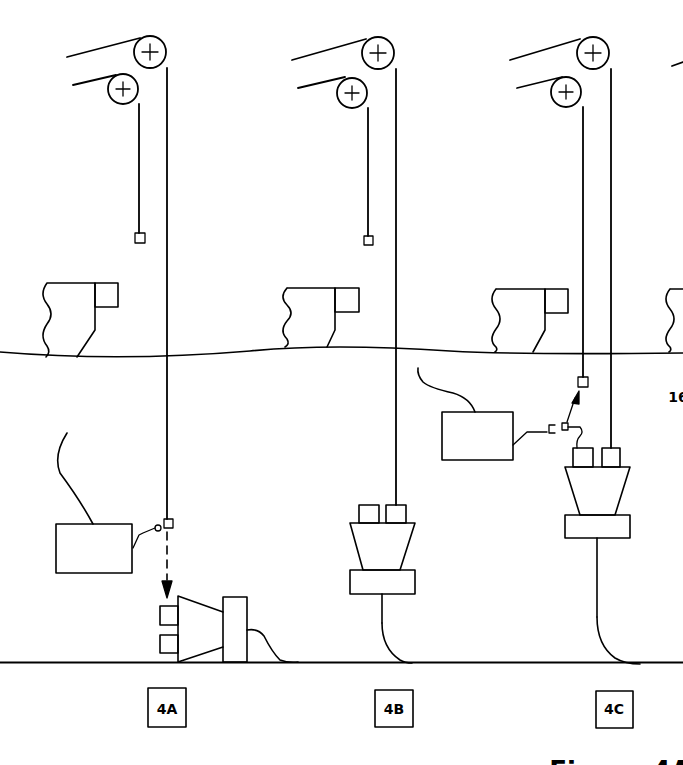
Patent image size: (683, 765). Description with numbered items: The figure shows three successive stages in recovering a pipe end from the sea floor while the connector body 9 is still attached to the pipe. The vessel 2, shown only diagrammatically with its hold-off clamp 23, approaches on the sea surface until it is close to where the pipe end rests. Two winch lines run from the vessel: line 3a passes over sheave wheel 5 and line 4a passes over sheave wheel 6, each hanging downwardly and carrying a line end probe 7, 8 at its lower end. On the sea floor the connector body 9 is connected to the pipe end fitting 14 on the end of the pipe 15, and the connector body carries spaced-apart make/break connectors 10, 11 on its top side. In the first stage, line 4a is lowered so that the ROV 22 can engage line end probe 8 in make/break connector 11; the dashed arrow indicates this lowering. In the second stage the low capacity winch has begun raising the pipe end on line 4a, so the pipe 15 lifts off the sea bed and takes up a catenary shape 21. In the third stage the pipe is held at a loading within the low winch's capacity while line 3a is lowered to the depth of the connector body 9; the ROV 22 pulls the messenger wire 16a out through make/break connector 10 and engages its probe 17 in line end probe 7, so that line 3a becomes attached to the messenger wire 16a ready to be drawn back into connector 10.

In FIG. 4A, the vessel 2 is at (67, 313).
In FIG. 4B, the vessel 2 is at (310, 318).
In FIG. 4C, the vessel 2 is at (520, 320).
In FIG. 4A, the line of high capacity winch 3a is at (138, 120).
In FIG. 4B, the line of high capacity winch 3a is at (366, 122).
In FIG. 4C, the line of high capacity winch 3a is at (581, 173).
In FIG. 4A, the line of low capacity winch 4a is at (168, 120).
In FIG. 4B, the line of low capacity winch 4a is at (398, 122).
In FIG. 4C, the line of low capacity winch 4a is at (612, 173).
In FIG. 4A, the sheave wheel 5 is at (110, 97).
In FIG. 4B, the sheave wheel 5 is at (340, 97).
In FIG. 4C, the sheave wheel 5 is at (552, 100).
In FIG. 4A, the sheave wheel 6 is at (169, 49).
In FIG. 4B, the sheave wheel 6 is at (398, 50).
In FIG. 4C, the sheave wheel 6 is at (612, 52).
In FIG. 4A, the line end probe 7 is at (134, 235).
In FIG. 4B, the line end probe 7 is at (362, 240).
In FIG. 4C, the line end probe 7 is at (576, 381).
In FIG. 4A, the line end probe 8 is at (176, 518).
In FIG. 4A, the connector body 9 is at (192, 613).
In FIG. 4B, the connector body 9 is at (383, 540).
In FIG. 4C, the connector body 9 is at (602, 490).
In FIG. 4A, the make/break connector 10 is at (158, 612).
In FIG. 4B, the make/break connector 10 is at (362, 513).
In FIG. 4C, the make/break connector 10 is at (577, 460).
In FIG. 4A, the make/break connector 11 is at (158, 644).
In FIG. 4B, the make/break connector 11 is at (390, 507).
In FIG. 4C, the make/break connector 11 is at (612, 460).
In FIG. 4A, the pipe end fitting 14 is at (240, 608).
In FIG. 4B, the pipe end fitting 14 is at (348, 572).
In FIG. 4C, the pipe end fitting 14 is at (618, 530).
In FIG. 4A, the pipe 15 is at (268, 645).
In FIG. 4B, the pipe 15 is at (382, 608).
In FIG. 4C, the pipe 15 is at (600, 563).
In FIG. 4C, the messenger wire 16a is at (577, 431).
In FIG. 4C, the line end probe of messenger wire 17 is at (562, 420).
In FIG. 4B, the catenary shape 21 is at (393, 650).
In FIG. 4C, the catenary shape 21 is at (610, 642).
In FIG. 4A, the ROV 22 is at (110, 547).
In FIG. 4C, the ROV 22 is at (447, 463).
In FIG. 4A, the hold-off clamp 23 is at (103, 290).
In FIG. 4B, the hold-off clamp 23 is at (348, 295).
In FIG. 4C, the hold-off clamp 23 is at (556, 296).